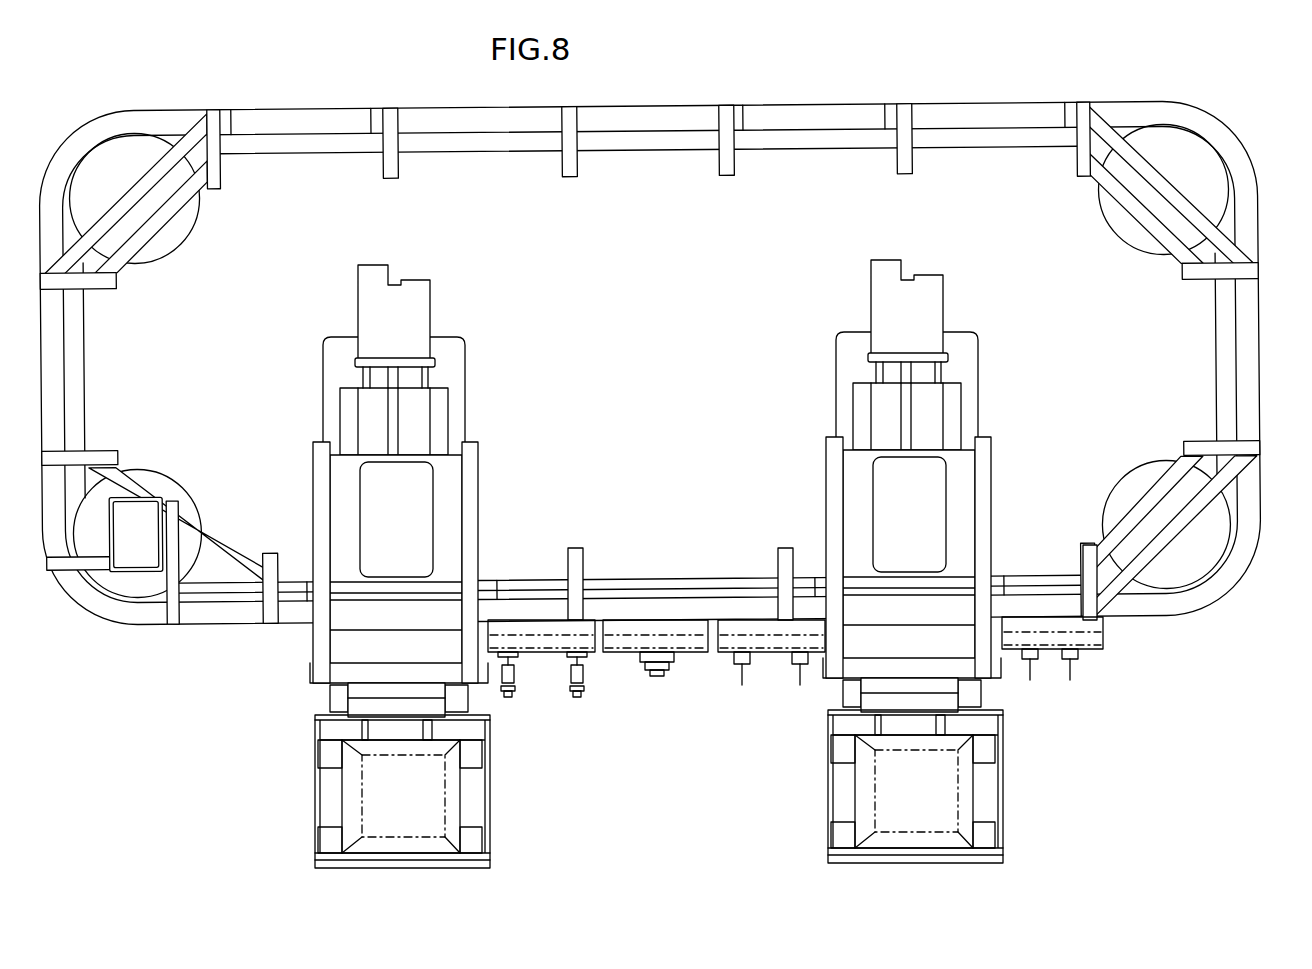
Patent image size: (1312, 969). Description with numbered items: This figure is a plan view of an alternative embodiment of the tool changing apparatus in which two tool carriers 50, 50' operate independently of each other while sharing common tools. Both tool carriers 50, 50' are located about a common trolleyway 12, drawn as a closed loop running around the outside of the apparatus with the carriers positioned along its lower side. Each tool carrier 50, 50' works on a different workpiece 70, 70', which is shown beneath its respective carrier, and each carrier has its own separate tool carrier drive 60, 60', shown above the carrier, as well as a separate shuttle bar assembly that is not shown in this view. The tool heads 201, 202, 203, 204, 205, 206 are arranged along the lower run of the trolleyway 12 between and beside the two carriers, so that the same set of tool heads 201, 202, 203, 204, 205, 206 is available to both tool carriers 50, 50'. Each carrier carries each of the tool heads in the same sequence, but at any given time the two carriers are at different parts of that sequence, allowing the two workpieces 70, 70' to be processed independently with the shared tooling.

The trolleyway 12 is at (318, 152).
The tool carrier 50 is at (384, 510).
The tool carrier 50' is at (912, 505).
The tool carrier drive 60 is at (412, 326).
The tool carrier drive 60' is at (931, 321).
The workpiece 70 is at (428, 791).
The workpiece 70' is at (949, 786).
The tool head 201 is at (363, 692).
The tool head 202 is at (531, 653).
The tool head 203 is at (628, 650).
The tool head 204 is at (730, 650).
The tool head 205 is at (940, 703).
The tool head 206 is at (1098, 640).